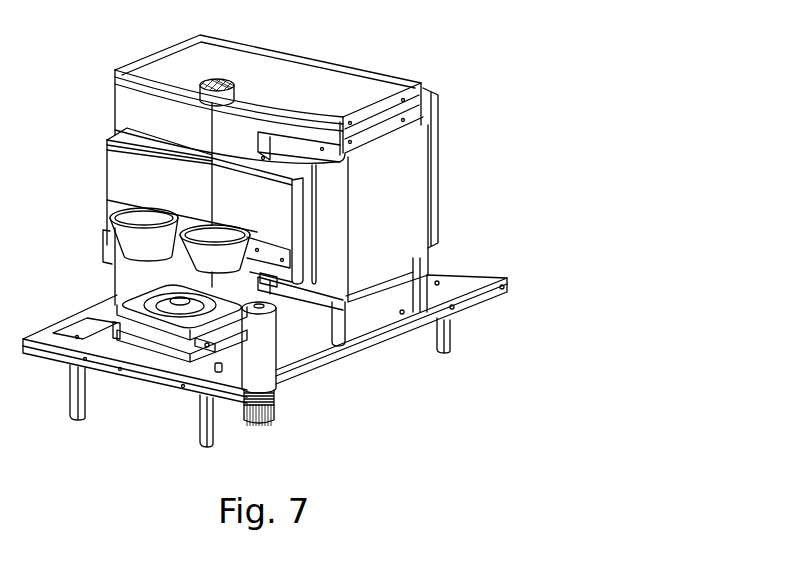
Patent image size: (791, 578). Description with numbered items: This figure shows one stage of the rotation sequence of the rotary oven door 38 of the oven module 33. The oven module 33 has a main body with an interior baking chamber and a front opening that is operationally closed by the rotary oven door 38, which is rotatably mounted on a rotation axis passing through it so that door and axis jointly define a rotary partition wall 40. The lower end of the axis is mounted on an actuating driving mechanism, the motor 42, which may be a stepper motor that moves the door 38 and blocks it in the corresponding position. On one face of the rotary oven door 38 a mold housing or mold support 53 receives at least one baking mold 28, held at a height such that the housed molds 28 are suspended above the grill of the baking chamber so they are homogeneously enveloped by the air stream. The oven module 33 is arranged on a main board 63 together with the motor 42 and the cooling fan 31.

The oven module 33 is at (363, 58).
The rotary partition wall 40 is at (195, 183).
The rotary oven door 38 is at (140, 181).
The baking mold 28 is at (210, 258).
The mold housing or mold support 53 is at (271, 250).
The main board 63 is at (457, 283).
The cooling fan 31 is at (167, 310).
The motor 42 is at (267, 343).